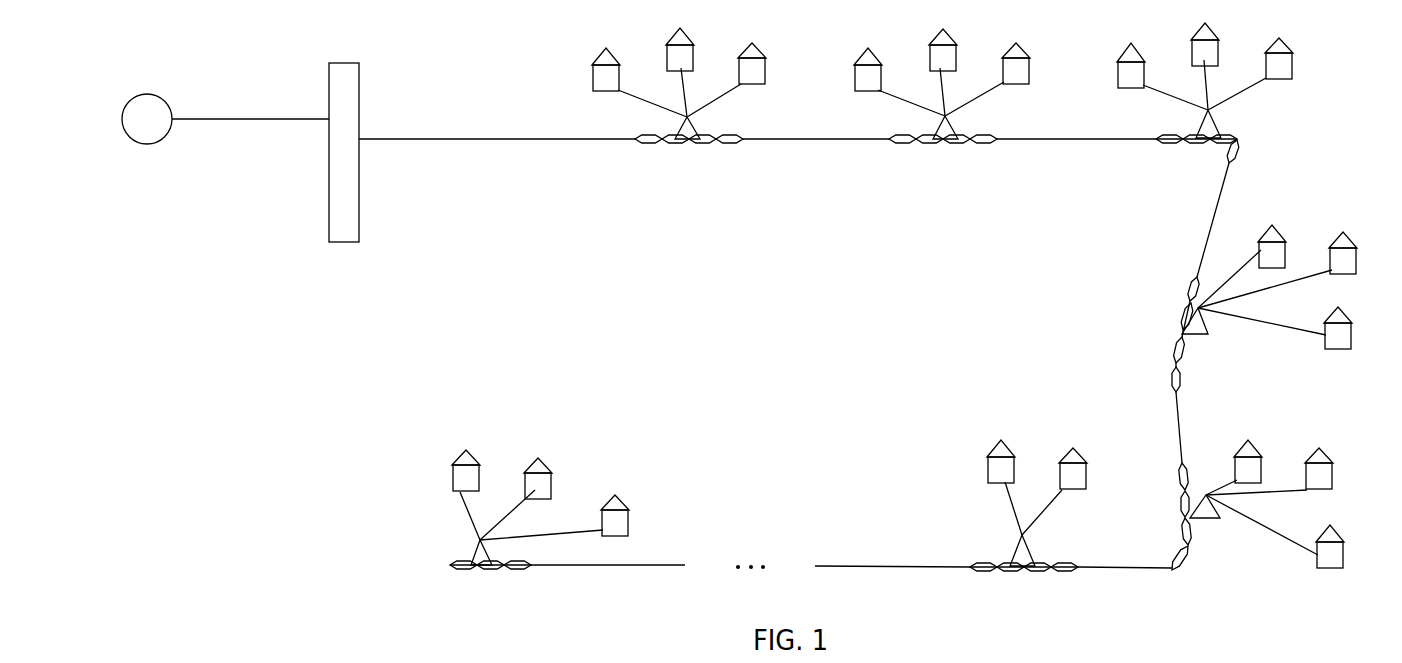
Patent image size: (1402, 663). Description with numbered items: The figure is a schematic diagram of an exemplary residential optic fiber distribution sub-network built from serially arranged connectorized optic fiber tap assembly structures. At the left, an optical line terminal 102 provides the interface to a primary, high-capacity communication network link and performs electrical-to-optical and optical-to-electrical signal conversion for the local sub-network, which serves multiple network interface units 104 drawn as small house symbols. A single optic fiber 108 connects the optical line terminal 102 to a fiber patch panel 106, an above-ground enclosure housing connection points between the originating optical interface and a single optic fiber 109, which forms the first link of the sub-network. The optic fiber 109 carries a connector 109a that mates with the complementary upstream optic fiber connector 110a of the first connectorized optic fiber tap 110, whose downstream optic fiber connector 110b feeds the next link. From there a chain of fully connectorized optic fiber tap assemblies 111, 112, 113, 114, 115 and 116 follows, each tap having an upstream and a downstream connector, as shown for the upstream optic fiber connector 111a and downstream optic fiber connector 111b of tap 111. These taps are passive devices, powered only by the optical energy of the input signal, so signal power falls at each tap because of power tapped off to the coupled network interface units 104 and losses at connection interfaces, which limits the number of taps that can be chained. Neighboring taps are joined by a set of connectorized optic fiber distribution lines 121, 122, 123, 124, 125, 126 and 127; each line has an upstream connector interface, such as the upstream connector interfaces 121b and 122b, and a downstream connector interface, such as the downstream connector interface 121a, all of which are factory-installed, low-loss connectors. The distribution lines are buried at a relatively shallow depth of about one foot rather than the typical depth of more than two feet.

The optical line terminal 102 is at (166, 100).
The network interface units 104 is at (600, 56).
The fiber patch panel 106 is at (329, 175).
The single optic fiber 108 is at (268, 117).
The single optic fiber 109 is at (485, 138).
The connector 109a is at (649, 143).
The connectorized optic fiber tap 110 is at (683, 129).
The upstream optic fiber connector 110a is at (672, 144).
The downstream optic fiber connector 110b is at (704, 144).
The connectorized optic fiber tap 111 is at (935, 130).
The upstream optic fiber connector 111a is at (924, 144).
The downstream optic fiber connector 111b is at (955, 144).
The connectorized optic fiber tap assembly 112 is at (1203, 129).
The connectorized optic fiber tap assembly 113 is at (1183, 334).
The connectorized optic fiber tap assembly 114 is at (1220, 518).
The connectorized optic fiber tap assembly 115 is at (1013, 560).
The connectorized optic fiber tap assembly 116 is at (471, 559).
The connectorized optic fiber distribution line 121 is at (812, 138).
The downstream connector interface 121a is at (901, 143).
The upstream connector interface 121b is at (742, 142).
The connectorized optic fiber distribution line 122 is at (1098, 138).
The upstream connector interface 122b is at (995, 142).
The connectorized optic fiber distribution line 123 is at (1216, 208).
The connectorized optic fiber distribution line 124 is at (1180, 431).
The connectorized optic fiber distribution line 125 is at (1141, 566).
The connectorized optic fiber distribution line 126 is at (910, 565).
The connectorized optic fiber distribution line 127 is at (674, 565).